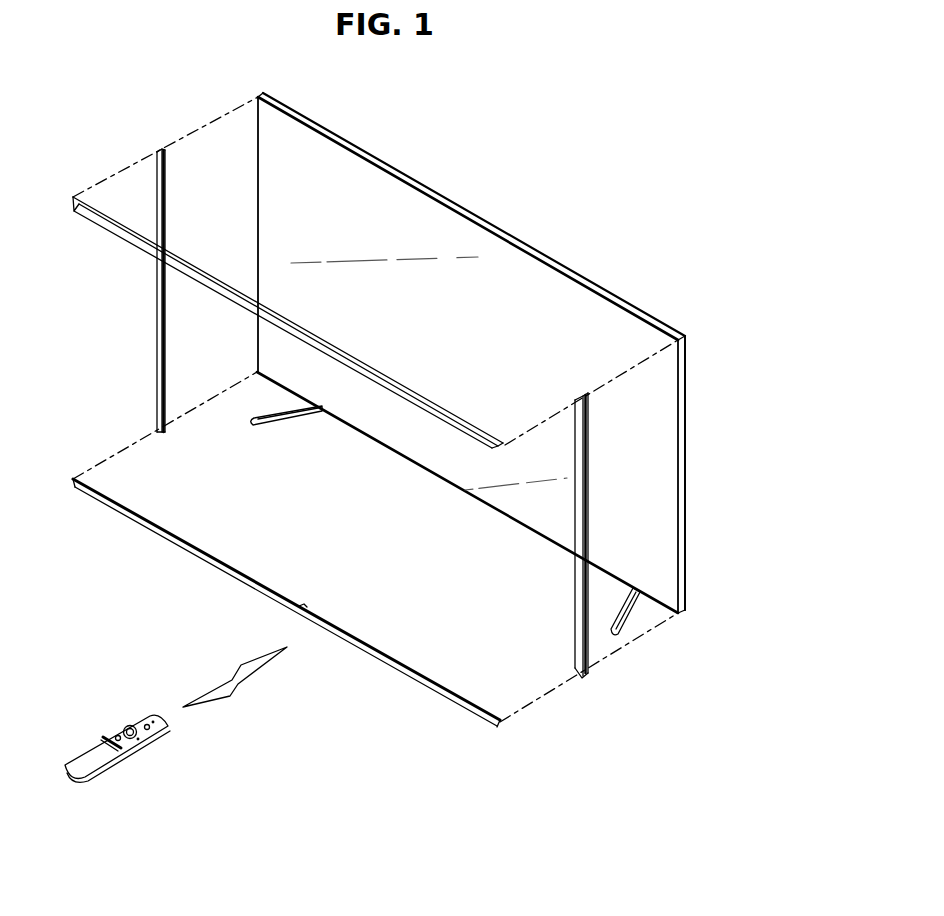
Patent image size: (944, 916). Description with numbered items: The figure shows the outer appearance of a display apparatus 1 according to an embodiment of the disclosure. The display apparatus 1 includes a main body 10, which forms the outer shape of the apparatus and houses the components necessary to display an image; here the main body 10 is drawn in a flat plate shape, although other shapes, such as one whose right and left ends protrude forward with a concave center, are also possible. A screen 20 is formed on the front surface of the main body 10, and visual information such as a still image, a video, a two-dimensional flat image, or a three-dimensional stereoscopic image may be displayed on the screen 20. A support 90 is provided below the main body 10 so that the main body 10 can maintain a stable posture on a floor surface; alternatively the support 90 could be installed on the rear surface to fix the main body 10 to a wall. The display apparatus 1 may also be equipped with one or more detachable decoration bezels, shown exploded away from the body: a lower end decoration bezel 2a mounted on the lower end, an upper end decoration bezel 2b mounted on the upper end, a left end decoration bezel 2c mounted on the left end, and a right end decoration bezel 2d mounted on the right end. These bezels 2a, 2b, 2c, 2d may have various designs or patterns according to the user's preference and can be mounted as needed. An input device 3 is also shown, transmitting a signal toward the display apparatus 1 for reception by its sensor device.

The display apparatus 1 is at (545, 160).
The main body 10 is at (394, 160).
The screen 20 is at (663, 453).
The support 90 is at (291, 423).
The lower end decoration bezel 2a is at (348, 641).
The upper end decoration bezel 2b is at (215, 276).
The left end decoration bezel 2c is at (156, 283).
The right end decoration bezel 2d is at (575, 585).
The input device 3 is at (92, 748).